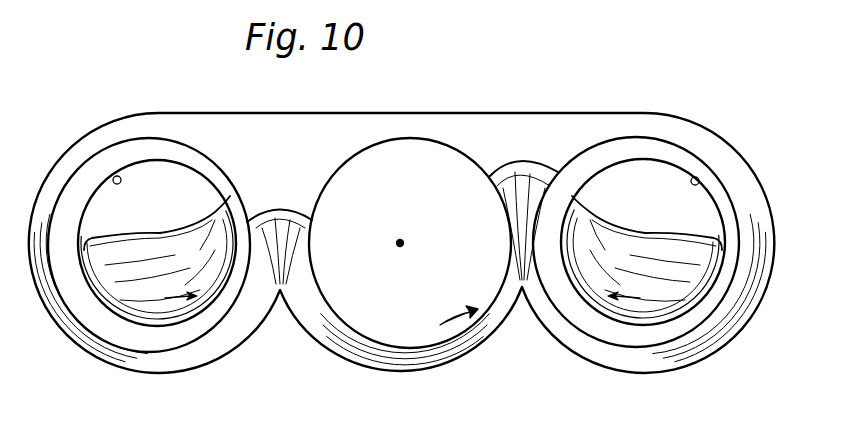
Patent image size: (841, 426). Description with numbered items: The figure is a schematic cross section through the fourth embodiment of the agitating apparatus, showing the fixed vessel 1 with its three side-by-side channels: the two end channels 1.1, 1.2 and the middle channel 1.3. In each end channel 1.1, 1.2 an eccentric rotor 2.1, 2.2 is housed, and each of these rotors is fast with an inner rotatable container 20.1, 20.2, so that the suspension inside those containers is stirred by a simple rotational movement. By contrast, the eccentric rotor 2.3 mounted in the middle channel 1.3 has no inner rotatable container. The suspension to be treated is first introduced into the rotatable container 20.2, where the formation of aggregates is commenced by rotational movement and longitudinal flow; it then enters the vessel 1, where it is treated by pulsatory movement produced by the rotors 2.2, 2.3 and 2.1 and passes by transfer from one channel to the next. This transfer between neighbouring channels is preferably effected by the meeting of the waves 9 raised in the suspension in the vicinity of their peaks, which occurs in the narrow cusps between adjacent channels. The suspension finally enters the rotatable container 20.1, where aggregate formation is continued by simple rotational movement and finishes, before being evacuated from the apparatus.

The fixed vessel 1 is at (658, 115).
The eccentric rotor 2.1 is at (141, 138).
The eccentric rotor 2.2 is at (688, 147).
The eccentric rotor 2.3 is at (357, 156).
The waves 9 is at (291, 207).
The inner rotatable container 20.1 is at (112, 182).
The inner rotatable container 20.2 is at (702, 181).
The end channel 1.1 is at (163, 375).
The end channel 1.2 is at (663, 372).
The middle channel 1.3 is at (406, 375).